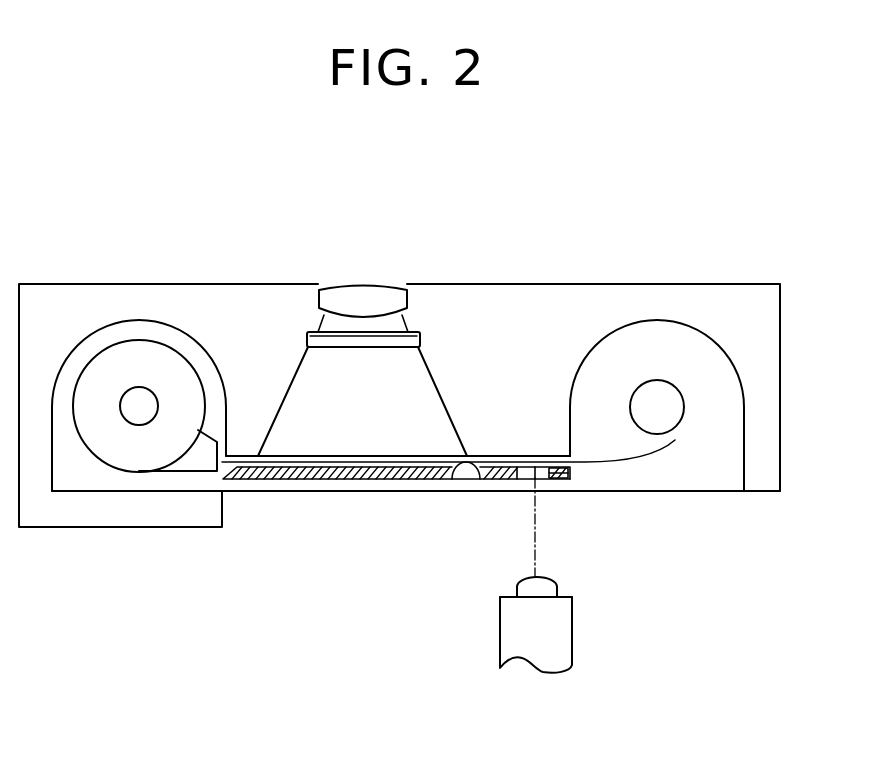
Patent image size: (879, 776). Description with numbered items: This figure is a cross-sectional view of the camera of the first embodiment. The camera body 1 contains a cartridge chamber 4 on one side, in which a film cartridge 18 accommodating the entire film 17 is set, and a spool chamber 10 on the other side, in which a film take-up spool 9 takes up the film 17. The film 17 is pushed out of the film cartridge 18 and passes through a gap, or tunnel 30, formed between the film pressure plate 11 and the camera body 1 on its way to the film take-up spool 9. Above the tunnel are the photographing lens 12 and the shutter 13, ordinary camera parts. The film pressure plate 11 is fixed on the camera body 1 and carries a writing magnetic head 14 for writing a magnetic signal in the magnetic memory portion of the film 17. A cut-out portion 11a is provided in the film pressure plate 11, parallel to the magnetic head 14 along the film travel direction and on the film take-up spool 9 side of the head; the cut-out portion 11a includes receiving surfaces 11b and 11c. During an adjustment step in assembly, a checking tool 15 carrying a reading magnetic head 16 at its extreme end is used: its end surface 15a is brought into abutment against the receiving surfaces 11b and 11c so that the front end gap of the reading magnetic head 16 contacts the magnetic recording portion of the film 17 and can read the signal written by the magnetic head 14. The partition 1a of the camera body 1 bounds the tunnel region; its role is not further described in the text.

The camera body 1 is at (658, 290).
The partition wall / floor of body 1a is at (245, 455).
The cartridge chamber 4 is at (115, 322).
The film cartridge 18 is at (123, 457).
The gap (tunnel) 30 is at (518, 456).
The spool chamber 10 is at (740, 383).
The film take-up spool 9 is at (668, 380).
The film 17 is at (663, 452).
The photographing lens 12 is at (365, 287).
The shutter 13 is at (422, 337).
The film pressure plate 11 is at (269, 480).
The magnetic head 14 is at (465, 480).
The receiving surface 11b is at (495, 480).
The receiving surface 11c is at (550, 480).
The cut-out portion 11a is at (572, 474).
The reading magnetic head 16 is at (515, 592).
The end surface 15a is at (560, 589).
The checking tool 15 is at (552, 655).